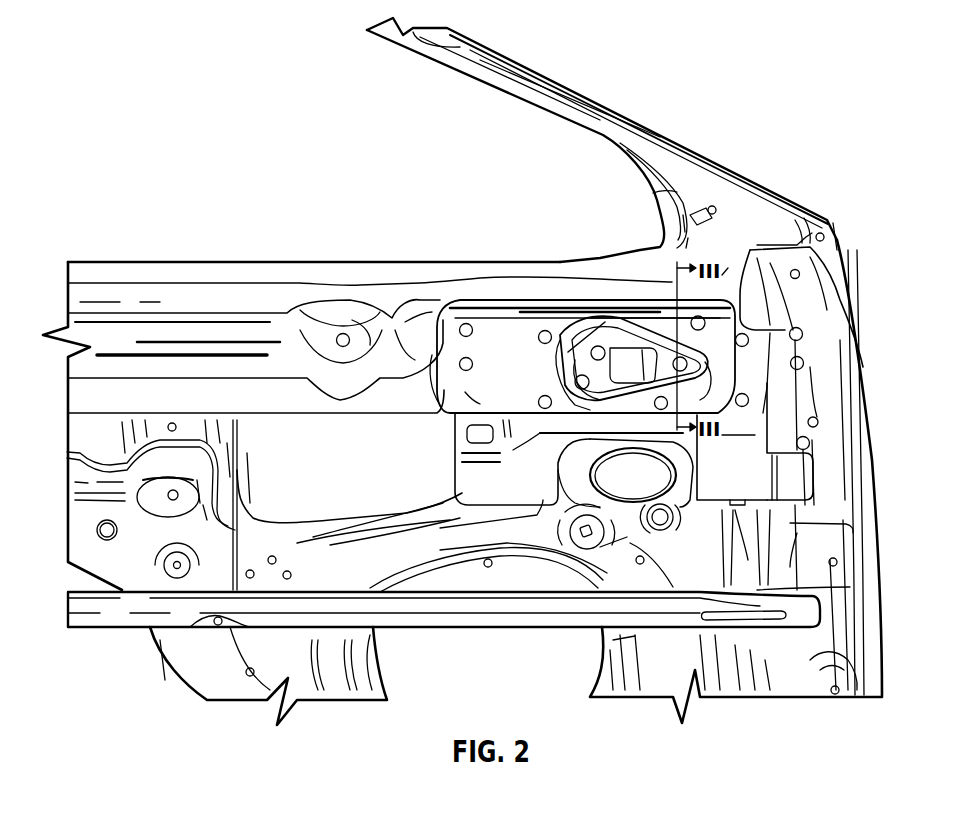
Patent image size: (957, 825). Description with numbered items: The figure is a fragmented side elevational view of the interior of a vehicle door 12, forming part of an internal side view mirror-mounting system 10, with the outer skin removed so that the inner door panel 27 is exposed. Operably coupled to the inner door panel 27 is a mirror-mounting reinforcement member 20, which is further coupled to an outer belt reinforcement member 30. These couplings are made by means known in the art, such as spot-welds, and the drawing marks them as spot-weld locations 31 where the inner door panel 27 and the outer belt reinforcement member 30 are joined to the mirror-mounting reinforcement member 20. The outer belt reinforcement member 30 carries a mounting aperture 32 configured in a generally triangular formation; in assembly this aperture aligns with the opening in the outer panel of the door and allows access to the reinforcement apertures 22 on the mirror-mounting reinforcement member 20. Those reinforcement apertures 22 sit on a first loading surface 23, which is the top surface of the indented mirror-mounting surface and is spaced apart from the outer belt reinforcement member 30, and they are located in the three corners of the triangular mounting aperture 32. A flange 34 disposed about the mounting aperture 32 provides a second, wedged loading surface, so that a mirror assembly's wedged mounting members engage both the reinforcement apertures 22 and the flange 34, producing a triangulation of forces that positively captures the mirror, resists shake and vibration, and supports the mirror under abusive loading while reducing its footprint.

The internal side view mirror-mounting system 10 is at (712, 363).
The vehicle door 12 is at (660, 98).
The mirror-mounting reinforcement member 20 is at (735, 473).
The reinforcement apertures 22 is at (592, 352).
The first loading surface 23 is at (607, 358).
The inner door panel 27 is at (288, 537).
The outer belt reinforcement member 30 is at (503, 333).
The spot-weld locations 31 is at (545, 337).
The mounting aperture 32 is at (603, 332).
The flange 34 is at (567, 338).